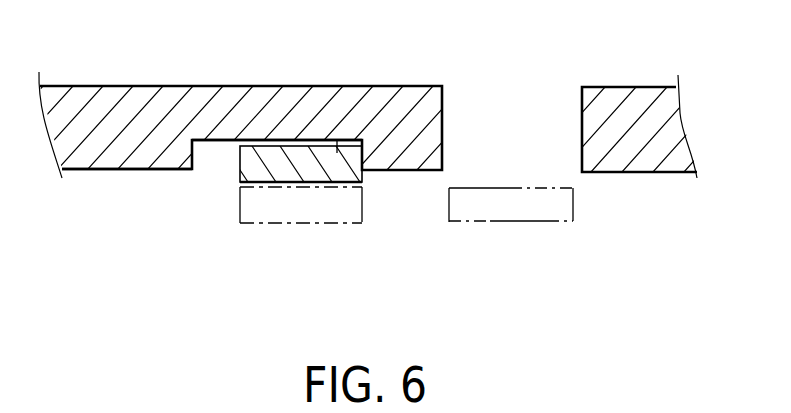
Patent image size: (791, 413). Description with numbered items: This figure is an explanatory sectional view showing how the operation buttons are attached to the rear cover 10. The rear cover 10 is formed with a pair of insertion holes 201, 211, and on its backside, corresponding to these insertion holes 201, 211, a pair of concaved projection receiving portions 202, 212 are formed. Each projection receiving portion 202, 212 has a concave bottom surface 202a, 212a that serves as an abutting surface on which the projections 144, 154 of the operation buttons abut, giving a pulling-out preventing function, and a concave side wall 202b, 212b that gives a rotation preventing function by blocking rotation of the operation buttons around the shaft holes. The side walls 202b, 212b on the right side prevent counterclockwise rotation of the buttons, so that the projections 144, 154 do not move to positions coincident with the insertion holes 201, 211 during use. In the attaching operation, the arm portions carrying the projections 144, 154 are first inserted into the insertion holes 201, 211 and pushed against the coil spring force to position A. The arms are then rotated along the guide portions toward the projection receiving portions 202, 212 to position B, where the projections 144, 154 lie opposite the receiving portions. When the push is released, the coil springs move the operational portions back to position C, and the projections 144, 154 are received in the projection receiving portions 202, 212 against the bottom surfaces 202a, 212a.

The rear cover 10 is at (298, 87).
The concave bottom surface 202a is at (209, 87).
The concave bottom surface 212a is at (225, 138).
The concave side wall 202b is at (279, 220).
The concave side wall 212b is at (200, 165).
The projection receiving portion 202 is at (244, 215).
The projection receiving portion 212 is at (204, 143).
The projection 144 is at (338, 104).
The projection 154 is at (360, 166).
The insertion hole 201 is at (629, 100).
The insertion hole 211 is at (582, 115).
The position A is at (550, 218).
The position B is at (285, 215).
The position C is at (327, 185).